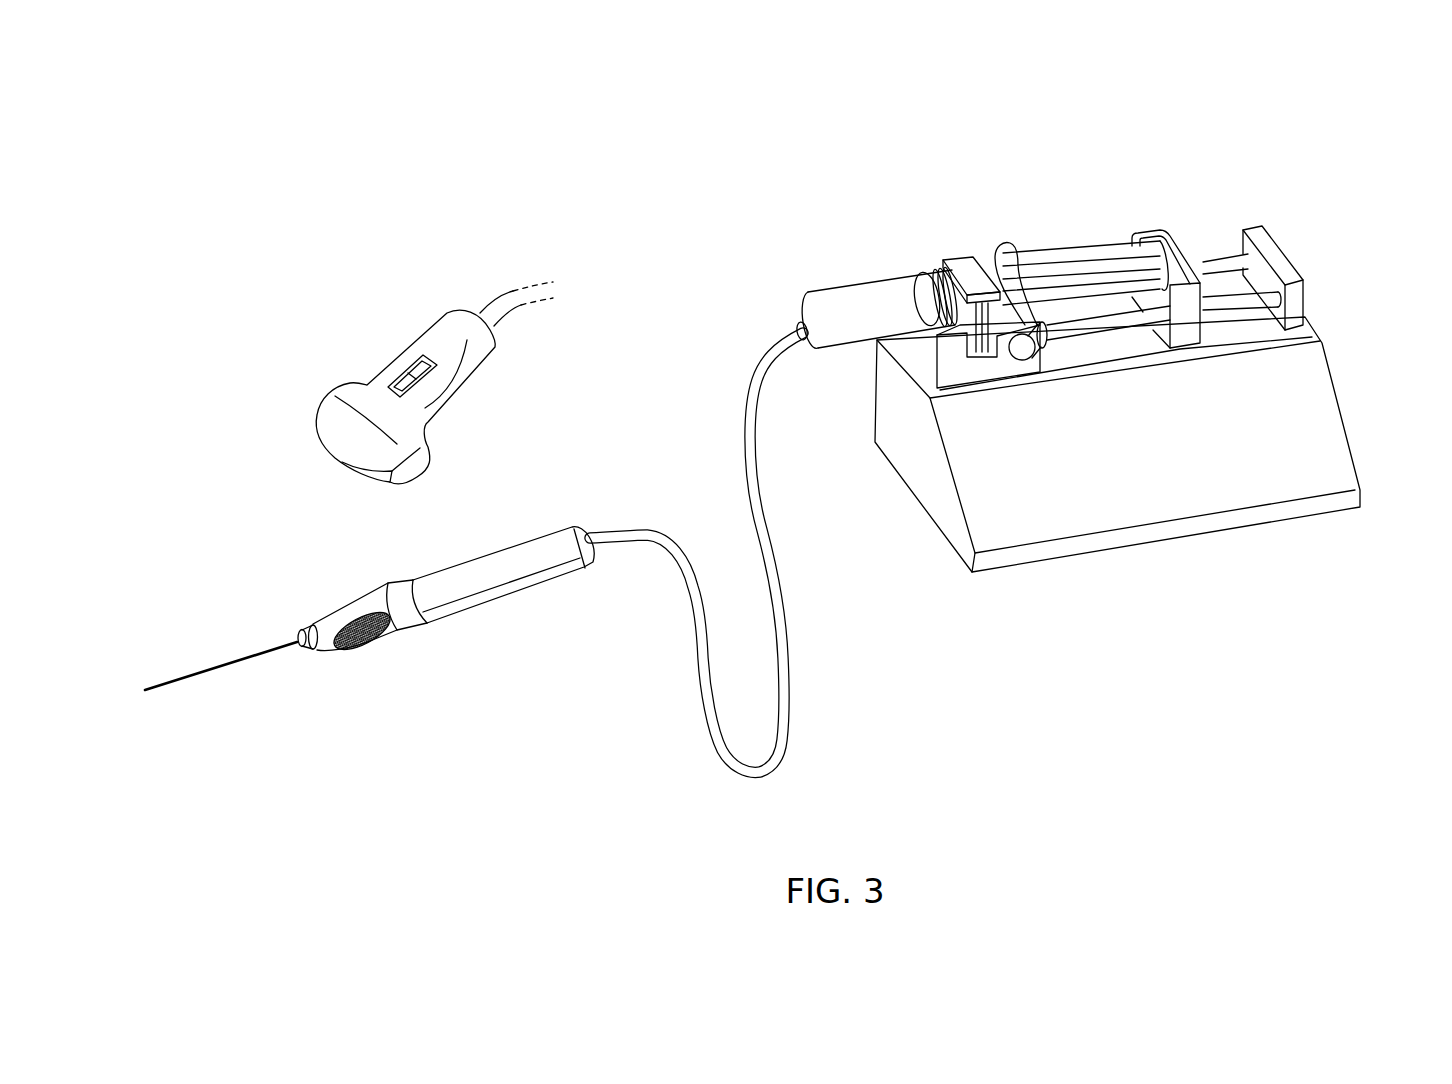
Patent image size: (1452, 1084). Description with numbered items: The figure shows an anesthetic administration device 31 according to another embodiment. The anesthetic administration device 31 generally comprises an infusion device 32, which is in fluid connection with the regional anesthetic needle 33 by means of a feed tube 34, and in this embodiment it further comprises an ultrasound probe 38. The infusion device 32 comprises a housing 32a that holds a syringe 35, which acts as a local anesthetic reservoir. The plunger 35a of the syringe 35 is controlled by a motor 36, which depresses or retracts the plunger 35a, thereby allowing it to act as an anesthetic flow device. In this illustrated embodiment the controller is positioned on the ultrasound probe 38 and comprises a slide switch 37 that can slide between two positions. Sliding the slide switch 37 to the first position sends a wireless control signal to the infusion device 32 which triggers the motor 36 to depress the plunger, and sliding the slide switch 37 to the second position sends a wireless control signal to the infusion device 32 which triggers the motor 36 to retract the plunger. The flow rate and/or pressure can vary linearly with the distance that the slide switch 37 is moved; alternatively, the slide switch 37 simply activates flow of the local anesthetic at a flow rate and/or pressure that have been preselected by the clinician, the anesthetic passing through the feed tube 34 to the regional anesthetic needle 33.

The anesthetic administration device 31 is at (1332, 112).
The infusion device 32 is at (1109, 408).
The housing 32a is at (1310, 443).
The regional anesthetic needle 33 is at (614, 611).
The feed tube 34 is at (750, 773).
The syringe 35 is at (883, 283).
The plunger 35a is at (1087, 252).
The motor 36 is at (1190, 262).
The slide switch 37 is at (391, 345).
The ultrasound probe 38 is at (390, 389).